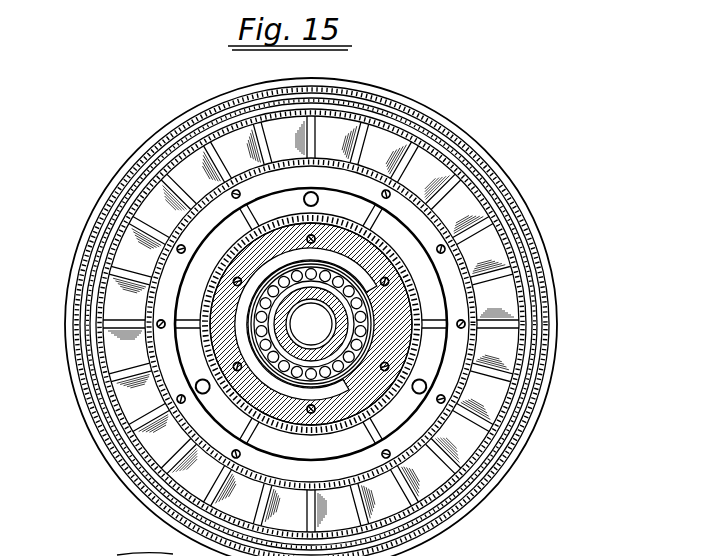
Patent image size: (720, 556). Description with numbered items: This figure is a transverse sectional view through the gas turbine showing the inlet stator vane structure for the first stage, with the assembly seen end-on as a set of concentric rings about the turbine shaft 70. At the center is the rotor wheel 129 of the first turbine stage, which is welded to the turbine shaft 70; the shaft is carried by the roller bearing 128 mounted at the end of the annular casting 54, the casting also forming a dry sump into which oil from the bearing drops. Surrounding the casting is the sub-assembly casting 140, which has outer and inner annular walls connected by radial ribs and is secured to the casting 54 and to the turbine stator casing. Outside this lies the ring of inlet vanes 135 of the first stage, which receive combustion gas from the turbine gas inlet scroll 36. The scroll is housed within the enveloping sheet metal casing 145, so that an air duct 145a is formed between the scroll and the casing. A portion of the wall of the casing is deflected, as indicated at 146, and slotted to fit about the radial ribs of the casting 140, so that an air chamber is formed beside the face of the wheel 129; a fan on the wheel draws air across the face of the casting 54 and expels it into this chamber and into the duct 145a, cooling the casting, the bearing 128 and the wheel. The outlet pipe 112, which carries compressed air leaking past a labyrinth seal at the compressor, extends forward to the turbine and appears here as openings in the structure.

The enveloping sheet metal casing 145 is at (518, 187).
The air duct 145a is at (522, 219).
The inlet vanes 135 is at (211, 160).
The sub-assembly casting 140 is at (437, 411).
The turbine gas inlet scroll 36 is at (333, 490).
The outlet pipe 112 is at (314, 195).
The deflected portion of casing wall 146 is at (304, 433).
The annular casting 54 is at (370, 258).
The turbine shaft 70 is at (345, 382).
The roller bearing 128 is at (290, 268).
The rotor wheel 129 is at (325, 333).